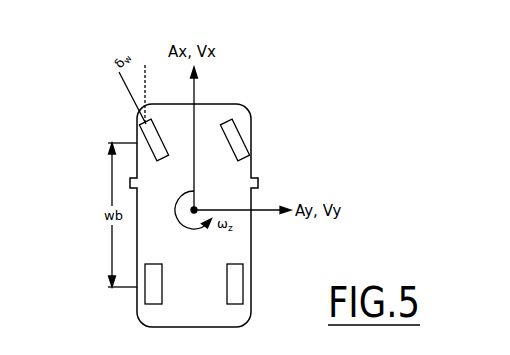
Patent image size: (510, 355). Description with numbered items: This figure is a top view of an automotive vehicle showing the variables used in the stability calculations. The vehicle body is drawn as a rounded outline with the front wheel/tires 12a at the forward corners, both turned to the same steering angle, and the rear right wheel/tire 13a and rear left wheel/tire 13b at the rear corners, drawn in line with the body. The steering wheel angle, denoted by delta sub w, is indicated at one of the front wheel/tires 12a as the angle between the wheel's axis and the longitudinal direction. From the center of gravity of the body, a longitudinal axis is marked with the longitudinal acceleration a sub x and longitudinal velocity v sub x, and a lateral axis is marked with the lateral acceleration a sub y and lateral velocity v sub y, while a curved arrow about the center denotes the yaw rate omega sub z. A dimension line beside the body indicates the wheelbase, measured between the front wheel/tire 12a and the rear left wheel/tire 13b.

The front wheel/tire 12a is at (138, 137).
The rear right wheel/tire 13a is at (243, 280).
The rear left wheel/tire 13b is at (144, 294).